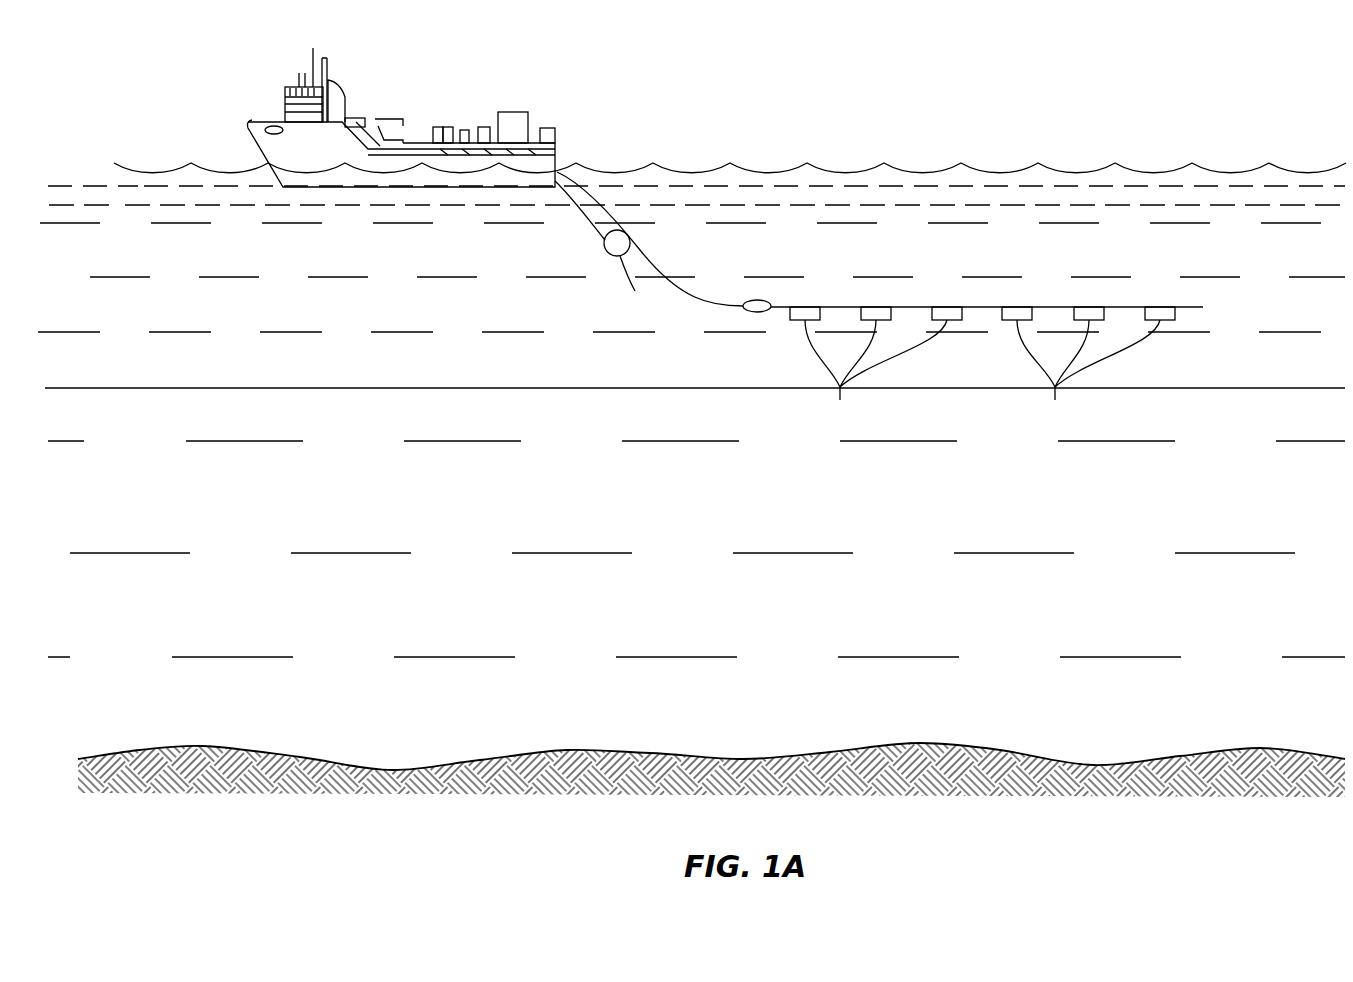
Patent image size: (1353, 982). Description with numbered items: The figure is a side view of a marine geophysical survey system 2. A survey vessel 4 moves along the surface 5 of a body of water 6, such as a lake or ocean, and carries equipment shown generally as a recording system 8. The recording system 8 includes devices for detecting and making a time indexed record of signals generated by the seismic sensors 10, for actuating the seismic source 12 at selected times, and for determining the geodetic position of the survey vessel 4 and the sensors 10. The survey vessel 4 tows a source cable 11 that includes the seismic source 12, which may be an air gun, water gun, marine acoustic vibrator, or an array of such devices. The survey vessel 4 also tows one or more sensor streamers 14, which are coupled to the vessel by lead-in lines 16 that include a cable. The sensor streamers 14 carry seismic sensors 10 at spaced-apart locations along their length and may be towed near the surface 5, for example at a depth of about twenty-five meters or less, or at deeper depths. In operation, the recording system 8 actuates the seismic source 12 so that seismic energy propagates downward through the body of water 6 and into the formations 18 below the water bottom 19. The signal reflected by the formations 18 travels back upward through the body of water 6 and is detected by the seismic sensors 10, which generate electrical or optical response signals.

The marine geophysical survey system 2 is at (582, 271).
The survey vessel 4 is at (355, 118).
The surface 5 is at (921, 174).
The body of water 6 is at (341, 364).
The recording system 8 is at (515, 112).
The seismic sensors 10 is at (982, 371).
The source cable 11 is at (581, 225).
The seismic source 12 is at (627, 278).
The sensor streamers 14 is at (1125, 302).
The lead-in lines 16 is at (680, 267).
The formations 18 is at (1211, 849).
The water bottom 19 is at (1244, 748).